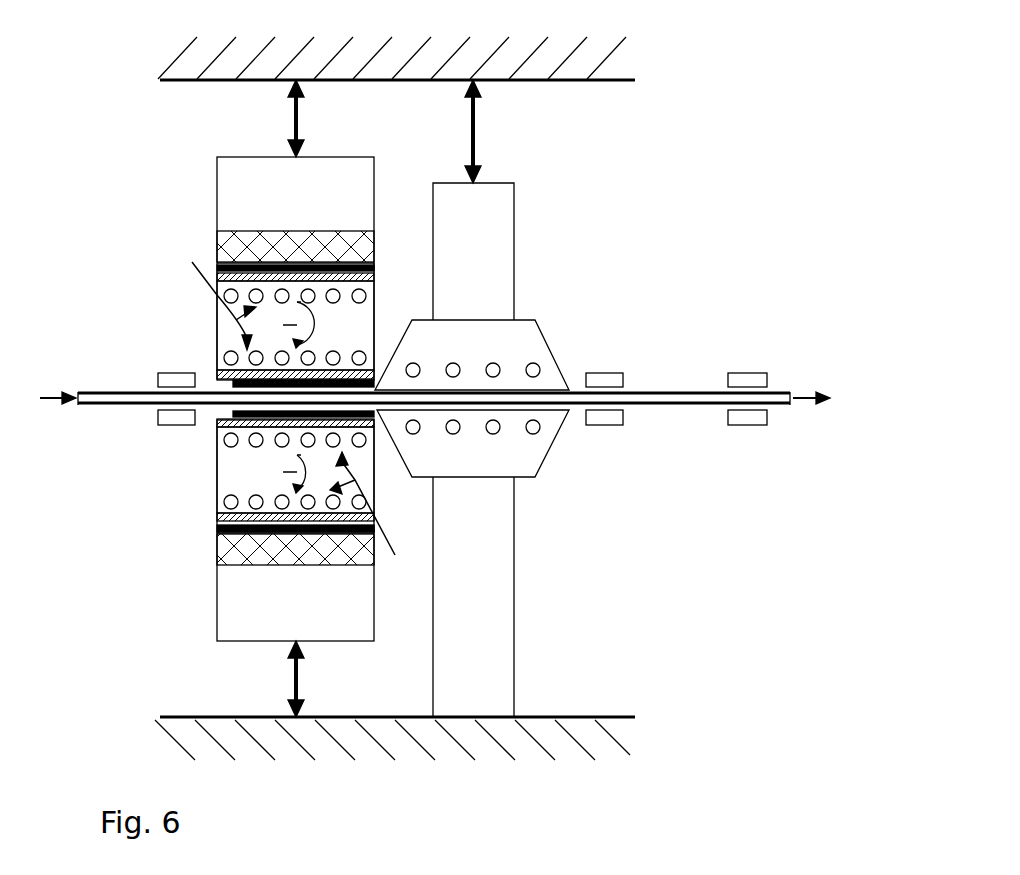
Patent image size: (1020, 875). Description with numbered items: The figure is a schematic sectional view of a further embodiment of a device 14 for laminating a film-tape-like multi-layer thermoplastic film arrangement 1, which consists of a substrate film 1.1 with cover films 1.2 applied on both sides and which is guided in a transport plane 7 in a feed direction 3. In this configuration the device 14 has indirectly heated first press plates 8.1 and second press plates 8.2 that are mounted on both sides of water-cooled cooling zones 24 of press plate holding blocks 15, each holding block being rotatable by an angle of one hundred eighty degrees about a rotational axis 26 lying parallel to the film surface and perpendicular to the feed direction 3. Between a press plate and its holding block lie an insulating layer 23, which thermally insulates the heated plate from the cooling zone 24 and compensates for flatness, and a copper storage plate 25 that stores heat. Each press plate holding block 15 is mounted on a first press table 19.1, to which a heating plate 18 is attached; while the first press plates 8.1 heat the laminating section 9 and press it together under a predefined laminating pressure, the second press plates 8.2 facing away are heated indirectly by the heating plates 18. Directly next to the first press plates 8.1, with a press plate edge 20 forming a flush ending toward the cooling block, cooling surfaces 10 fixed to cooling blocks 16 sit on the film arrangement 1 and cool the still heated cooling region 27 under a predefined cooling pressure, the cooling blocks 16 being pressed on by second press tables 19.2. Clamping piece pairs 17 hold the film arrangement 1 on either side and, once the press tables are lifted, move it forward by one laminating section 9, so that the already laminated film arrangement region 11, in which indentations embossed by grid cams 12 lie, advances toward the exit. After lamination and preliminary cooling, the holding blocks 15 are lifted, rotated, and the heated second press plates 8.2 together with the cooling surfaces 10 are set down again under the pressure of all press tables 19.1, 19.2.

The film arrangement 1 is at (58, 383).
The substrate film 1.1 is at (80, 408).
The cover films 1.2 is at (100, 391).
The feed direction 3 is at (812, 384).
The transport plane 7 is at (779, 375).
The first press plate 8.1 is at (378, 390).
The second press plate 8.2 is at (358, 277).
The laminating section 9 is at (213, 406).
The cooling surface 10 is at (556, 378).
The laminated film arrangement region 11 is at (683, 380).
The grid cams 12 is at (217, 262).
The device for laminating 14 is at (776, 60).
The press plate holding block 15 is at (228, 338).
The cooling block 16 is at (507, 342).
The clamping piece pairs 17 is at (178, 418).
The heating plate 18 is at (290, 247).
The first press table 19.1 is at (288, 172).
The second press table 19.2 is at (483, 262).
The press plate edge 20 is at (377, 412).
The insulating layer 23 is at (233, 380).
The cooling zone 24 is at (287, 411).
The storage plate 25 is at (217, 277).
The rotational axis 26 is at (285, 398).
The cooling region 27 is at (492, 408).